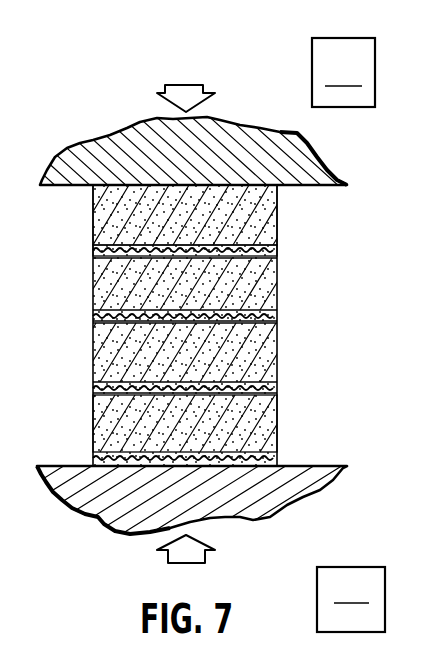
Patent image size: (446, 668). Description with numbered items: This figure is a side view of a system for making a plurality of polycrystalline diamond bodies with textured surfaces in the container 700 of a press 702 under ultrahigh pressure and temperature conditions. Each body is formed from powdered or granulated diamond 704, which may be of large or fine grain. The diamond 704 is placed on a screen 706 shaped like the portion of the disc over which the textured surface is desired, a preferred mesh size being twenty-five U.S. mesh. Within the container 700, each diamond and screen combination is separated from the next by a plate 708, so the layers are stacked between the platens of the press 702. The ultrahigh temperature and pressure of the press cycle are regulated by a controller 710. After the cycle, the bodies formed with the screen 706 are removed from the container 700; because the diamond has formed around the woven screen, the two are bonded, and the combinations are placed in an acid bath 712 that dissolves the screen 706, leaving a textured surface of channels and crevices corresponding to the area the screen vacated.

The container 700 is at (196, 325).
The press 702 is at (74, 191).
The diamond 704 is at (278, 220).
The screen 706 is at (93, 251).
The plate 708 is at (278, 408).
The controller 710 is at (252, 121).
The acid bath 712 is at (257, 519).